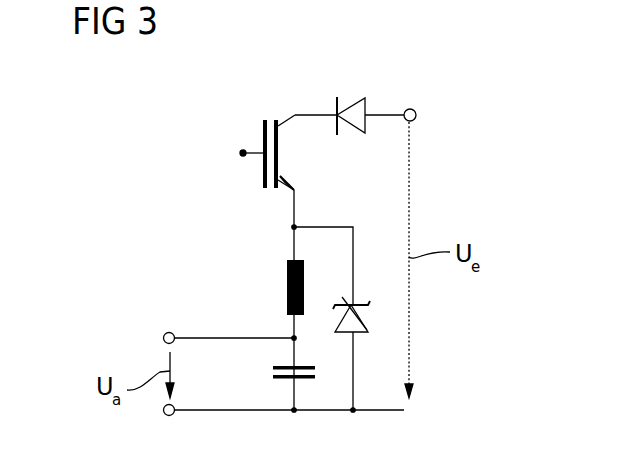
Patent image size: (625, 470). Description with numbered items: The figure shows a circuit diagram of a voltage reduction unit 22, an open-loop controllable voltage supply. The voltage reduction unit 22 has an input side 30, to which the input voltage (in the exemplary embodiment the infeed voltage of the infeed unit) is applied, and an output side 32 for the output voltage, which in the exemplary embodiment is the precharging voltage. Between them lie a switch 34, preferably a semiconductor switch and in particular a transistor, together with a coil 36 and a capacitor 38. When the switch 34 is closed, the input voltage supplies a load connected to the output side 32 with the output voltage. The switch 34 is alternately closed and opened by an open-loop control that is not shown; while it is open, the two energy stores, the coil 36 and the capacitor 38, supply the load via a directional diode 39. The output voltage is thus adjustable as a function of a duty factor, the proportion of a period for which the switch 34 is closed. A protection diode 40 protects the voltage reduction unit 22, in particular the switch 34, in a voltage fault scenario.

The voltage reduction unit 22 is at (272, 92).
The input side 30 is at (455, 147).
The output side 32 is at (143, 354).
The switch 34 is at (232, 127).
The coil 36 is at (287, 290).
The capacitor 38 is at (274, 369).
The directional diode 39 is at (360, 316).
The protection diode 40 is at (344, 100).